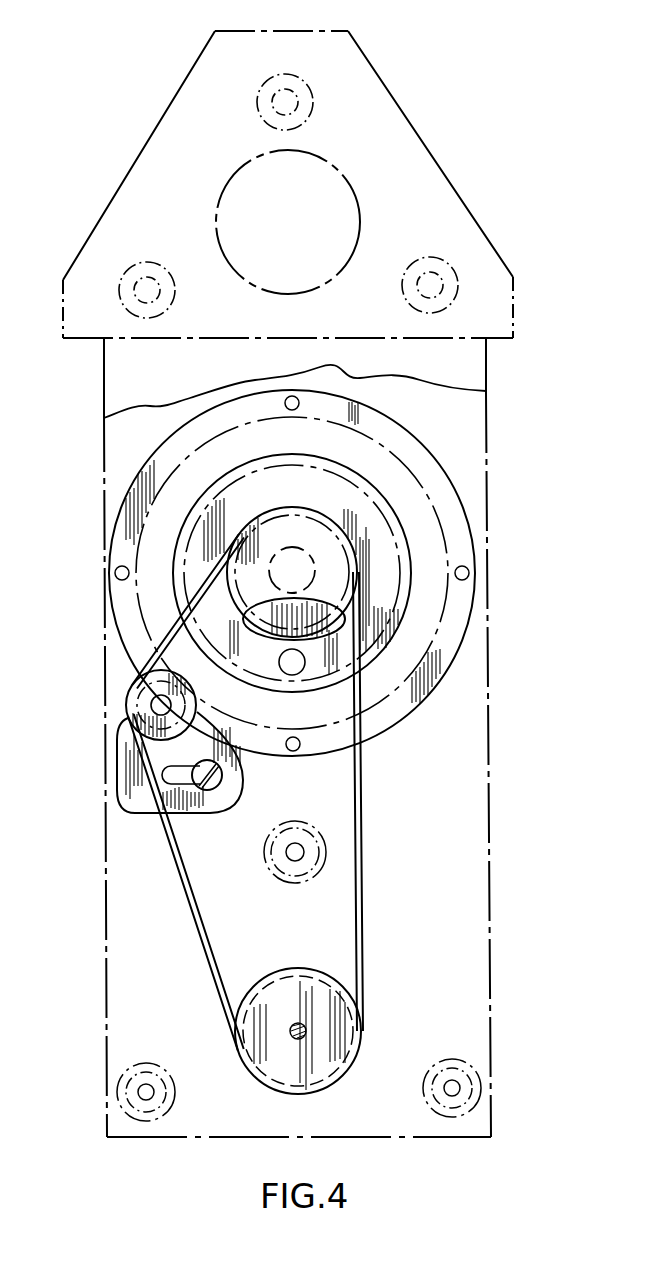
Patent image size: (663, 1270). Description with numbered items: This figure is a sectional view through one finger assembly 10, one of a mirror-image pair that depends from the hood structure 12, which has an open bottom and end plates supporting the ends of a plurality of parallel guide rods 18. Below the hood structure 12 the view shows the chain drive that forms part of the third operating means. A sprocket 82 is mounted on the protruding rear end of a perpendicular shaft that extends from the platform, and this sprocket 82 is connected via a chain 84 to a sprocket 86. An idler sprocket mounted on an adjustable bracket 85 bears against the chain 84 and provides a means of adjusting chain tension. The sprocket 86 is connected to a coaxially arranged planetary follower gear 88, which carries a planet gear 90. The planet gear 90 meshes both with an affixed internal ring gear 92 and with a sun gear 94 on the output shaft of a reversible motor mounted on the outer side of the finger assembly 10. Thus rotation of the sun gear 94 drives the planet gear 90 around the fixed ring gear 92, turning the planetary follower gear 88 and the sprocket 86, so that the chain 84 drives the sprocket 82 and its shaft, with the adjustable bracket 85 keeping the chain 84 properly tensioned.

The finger assembly 10 is at (536, 606).
The hood structure 12 is at (500, 184).
The guide rods 18 is at (296, 106).
The sprocket 82 is at (337, 1030).
The chain 84 is at (363, 797).
The adjustable bracket 85 is at (199, 807).
The sprocket 86 is at (329, 514).
The planetary follower gear 88 is at (407, 582).
The planet gear 90 is at (291, 620).
The internal ring gear 92 is at (443, 500).
The sun gear 94 is at (320, 566).